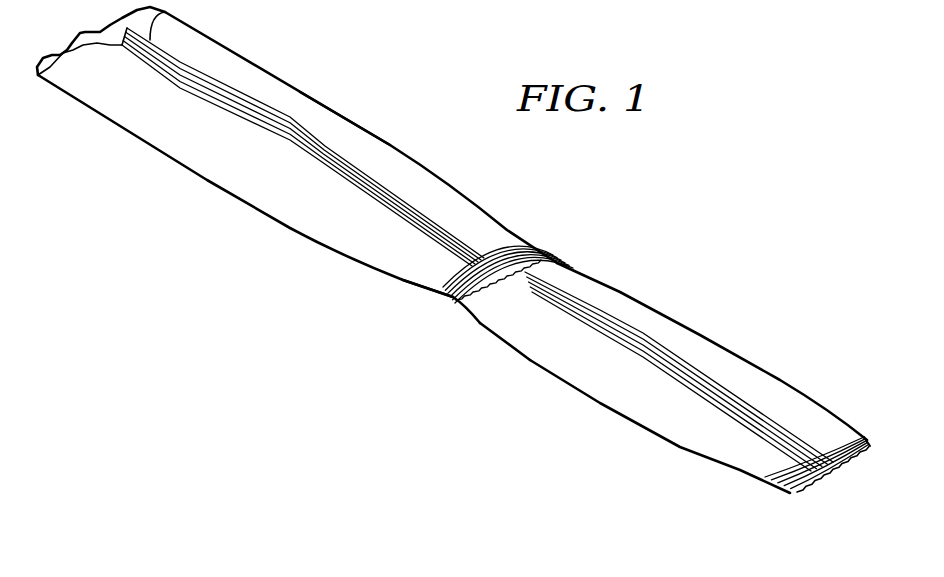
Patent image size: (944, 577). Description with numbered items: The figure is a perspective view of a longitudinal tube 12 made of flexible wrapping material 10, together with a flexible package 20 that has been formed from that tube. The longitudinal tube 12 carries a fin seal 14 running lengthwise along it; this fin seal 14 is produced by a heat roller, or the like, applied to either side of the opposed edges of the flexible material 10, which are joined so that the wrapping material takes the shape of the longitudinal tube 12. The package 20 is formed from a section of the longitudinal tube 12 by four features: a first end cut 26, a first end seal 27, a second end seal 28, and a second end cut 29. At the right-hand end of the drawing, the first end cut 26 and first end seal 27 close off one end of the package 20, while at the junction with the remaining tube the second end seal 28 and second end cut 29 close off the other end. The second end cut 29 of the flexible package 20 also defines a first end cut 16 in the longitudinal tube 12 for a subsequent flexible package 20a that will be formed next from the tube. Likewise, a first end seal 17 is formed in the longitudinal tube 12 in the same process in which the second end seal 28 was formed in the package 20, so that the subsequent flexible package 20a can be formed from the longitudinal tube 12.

The flexible wrapping material 10 is at (132, 115).
The longitudinal tube 12 is at (230, 53).
The fin seal 14 is at (375, 180).
The first end cut 16 is at (452, 297).
The first end seal 17 is at (519, 248).
The flexible package 20 is at (722, 314).
The subsequent flexible package 20a is at (383, 84).
The first end cut 26 is at (797, 490).
The first end seal 27 is at (850, 433).
The second end seal 28 is at (506, 310).
The second end cut 29 is at (543, 268).